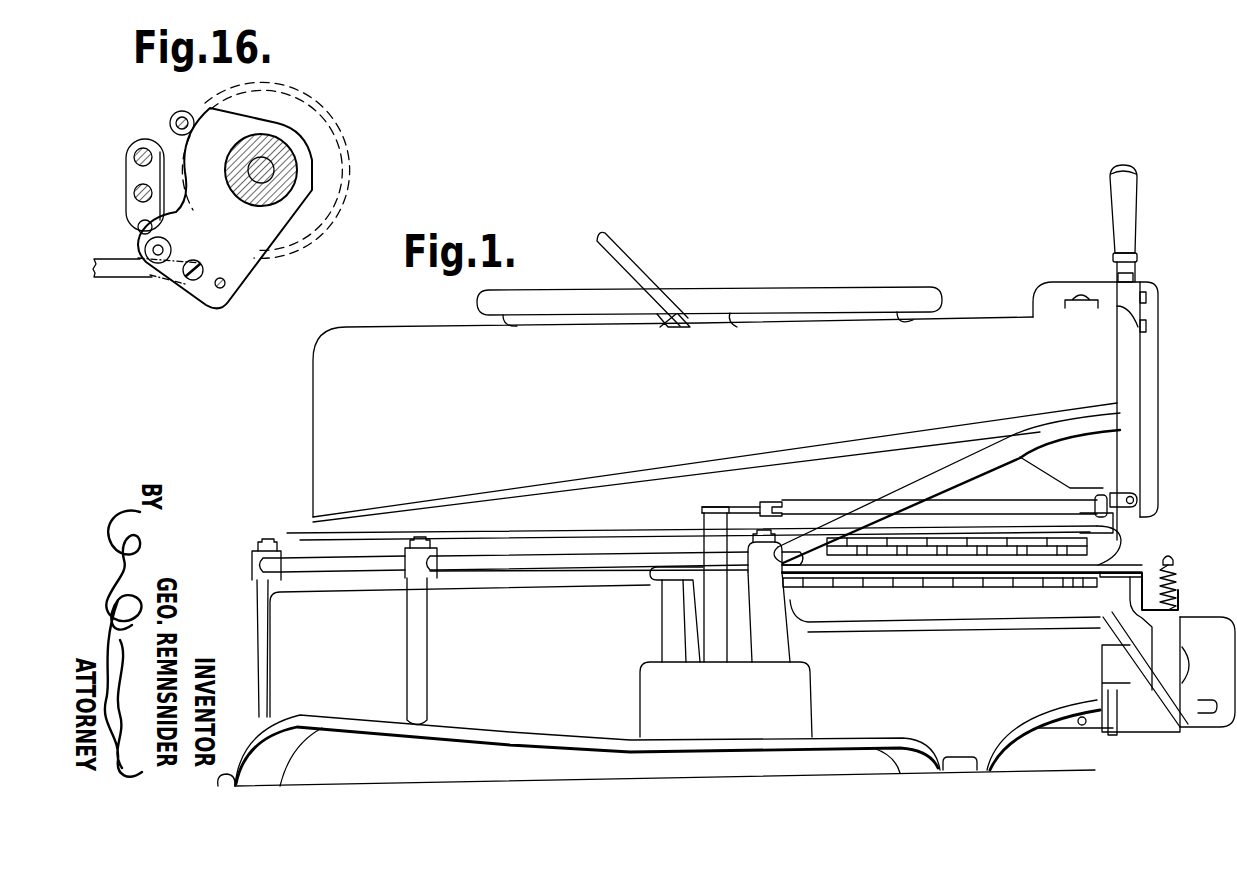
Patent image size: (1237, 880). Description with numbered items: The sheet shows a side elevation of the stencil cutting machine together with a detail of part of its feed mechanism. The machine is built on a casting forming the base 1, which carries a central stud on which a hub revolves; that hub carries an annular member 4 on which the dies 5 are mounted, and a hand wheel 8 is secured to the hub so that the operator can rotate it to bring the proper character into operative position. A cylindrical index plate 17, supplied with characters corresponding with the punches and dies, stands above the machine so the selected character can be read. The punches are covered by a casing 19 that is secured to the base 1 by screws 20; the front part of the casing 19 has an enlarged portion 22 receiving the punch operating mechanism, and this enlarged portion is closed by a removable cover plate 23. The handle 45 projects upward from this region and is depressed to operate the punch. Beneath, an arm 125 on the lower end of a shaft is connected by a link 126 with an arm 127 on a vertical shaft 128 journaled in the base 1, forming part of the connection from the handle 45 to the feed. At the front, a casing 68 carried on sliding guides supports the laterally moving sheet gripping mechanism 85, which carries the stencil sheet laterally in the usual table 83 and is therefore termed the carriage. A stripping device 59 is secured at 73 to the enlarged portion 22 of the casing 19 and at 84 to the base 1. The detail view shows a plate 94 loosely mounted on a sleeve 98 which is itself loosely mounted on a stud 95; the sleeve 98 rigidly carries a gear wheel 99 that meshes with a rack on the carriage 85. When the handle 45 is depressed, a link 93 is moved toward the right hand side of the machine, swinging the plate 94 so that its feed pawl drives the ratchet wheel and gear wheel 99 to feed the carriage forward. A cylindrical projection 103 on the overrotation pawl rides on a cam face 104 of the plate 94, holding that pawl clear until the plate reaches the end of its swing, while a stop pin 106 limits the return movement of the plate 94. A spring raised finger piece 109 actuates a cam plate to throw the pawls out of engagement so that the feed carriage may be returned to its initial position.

In FIG. 1, the casting forming the base 1 is at (665, 683).
In FIG. 1, the annular member 4 is at (957, 577).
In FIG. 1, the dies 5 is at (1000, 585).
In FIG. 1, the hand wheel 8 is at (772, 300).
In FIG. 1, the cylindrical index plate 17 is at (632, 271).
In FIG. 1, the casing 19 is at (715, 417).
In FIG. 1, the screws 20 is at (269, 539).
In FIG. 1, the enlarged portion 22 is at (1100, 291).
In FIG. 1, the removable cover plate 23 is at (1160, 421).
In FIG. 1, the handle 45 is at (1120, 193).
In FIG. 1, the stripping device 59 is at (1124, 550).
In FIG. 1, the casing 68 is at (1150, 717).
In FIG. 1, the securing point on enlarged portion 73 is at (1124, 526).
In FIG. 1, the table 83 is at (945, 631).
In FIG. 1, the securing point on base 84 is at (682, 576).
In FIG. 1, the sheet gripping mechanism 85 is at (1123, 573).
In FIG. 16, the link 93 is at (133, 270).
In FIG. 16, the plate 94 is at (225, 208).
In FIG. 16, the stud 95 is at (250, 171).
In FIG. 16, the sleeve 98 is at (290, 166).
In FIG. 16, the gear wheel 99 is at (318, 126).
In FIG. 16, the cylindrical projection 103 is at (170, 123).
In FIG. 16, the cam face 104 is at (180, 168).
In FIG. 16, the stop pin 106 is at (138, 229).
In FIG. 1, the spring raised finger piece 109 is at (1176, 561).
In FIG. 1, the arm 125 is at (1138, 501).
In FIG. 1, the link 126 is at (1025, 505).
In FIG. 1, the arm 127 is at (748, 508).
In FIG. 1, the vertical shaft 128 is at (713, 623).